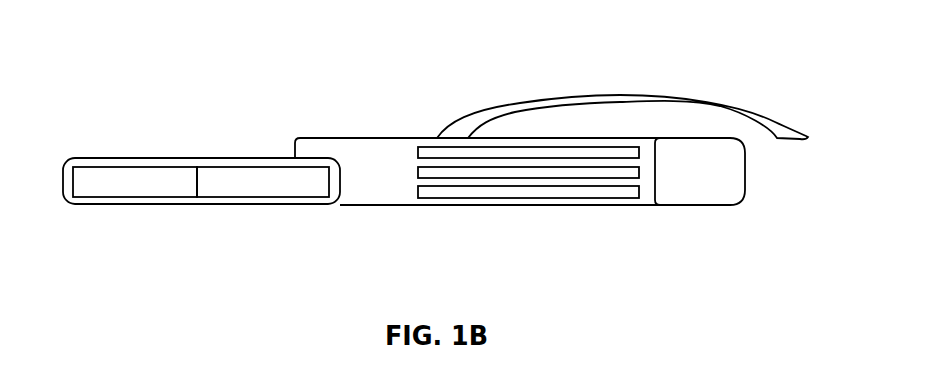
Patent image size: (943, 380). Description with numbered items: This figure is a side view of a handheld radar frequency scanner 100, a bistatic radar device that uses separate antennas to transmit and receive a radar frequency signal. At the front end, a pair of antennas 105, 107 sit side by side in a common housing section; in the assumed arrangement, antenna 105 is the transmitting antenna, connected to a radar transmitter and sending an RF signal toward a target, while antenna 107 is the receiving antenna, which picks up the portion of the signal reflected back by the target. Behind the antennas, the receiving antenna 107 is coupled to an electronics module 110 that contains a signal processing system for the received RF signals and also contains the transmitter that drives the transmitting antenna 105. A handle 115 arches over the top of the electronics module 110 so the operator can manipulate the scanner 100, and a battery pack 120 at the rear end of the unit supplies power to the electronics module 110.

The handheld radar frequency scanner 100 is at (160, 77).
The antenna 105 is at (117, 185).
The antenna 107 is at (258, 185).
The electronics module 110 is at (428, 146).
The handle 115 is at (627, 95).
The battery pack 120 is at (702, 206).